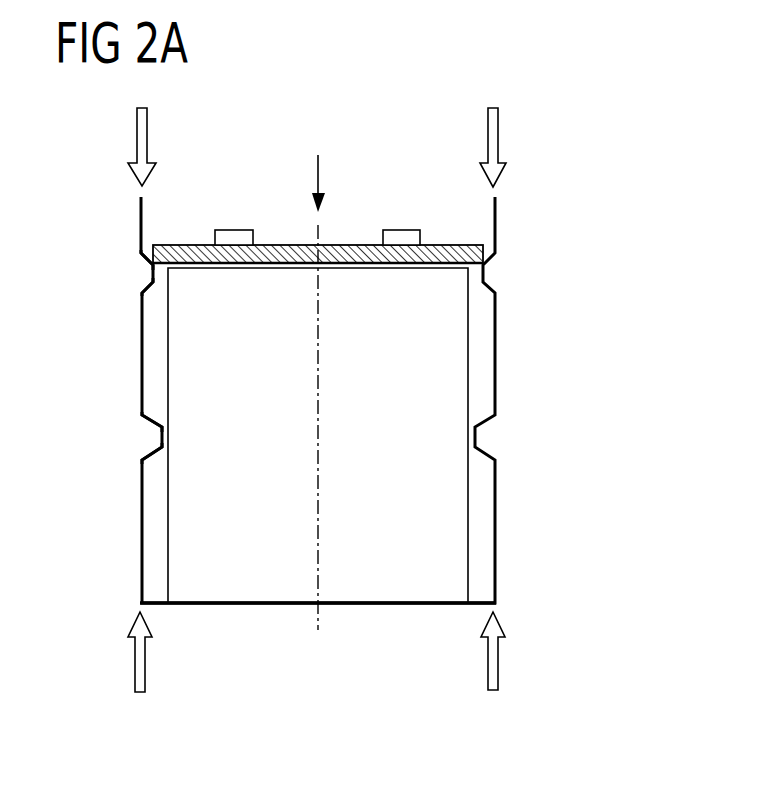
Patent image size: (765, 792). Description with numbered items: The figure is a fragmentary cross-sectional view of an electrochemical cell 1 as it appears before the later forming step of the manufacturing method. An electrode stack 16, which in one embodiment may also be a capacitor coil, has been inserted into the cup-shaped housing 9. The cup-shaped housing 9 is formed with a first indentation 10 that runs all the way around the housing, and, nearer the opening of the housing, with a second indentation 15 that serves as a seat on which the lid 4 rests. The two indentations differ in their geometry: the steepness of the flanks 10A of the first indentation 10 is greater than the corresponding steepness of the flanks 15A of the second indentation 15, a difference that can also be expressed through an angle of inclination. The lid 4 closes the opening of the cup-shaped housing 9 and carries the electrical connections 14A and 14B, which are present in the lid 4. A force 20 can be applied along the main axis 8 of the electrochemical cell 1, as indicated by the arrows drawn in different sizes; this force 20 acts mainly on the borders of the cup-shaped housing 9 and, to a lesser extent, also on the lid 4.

The electrochemical cell 1 is at (540, 337).
The lid 4 is at (340, 245).
The main axis 8 is at (318, 620).
The cup-shaped housing 9 is at (497, 530).
The first indentation 10 is at (146, 425).
The flanks of the first indentation 10A is at (148, 449).
The electrical connection 14A is at (237, 238).
The electrical connection 14B is at (403, 236).
The second indentation 15 is at (147, 267).
The flanks of the second indentation 15A is at (148, 280).
The electrode stack 16 is at (427, 592).
The force 20 is at (142, 122).